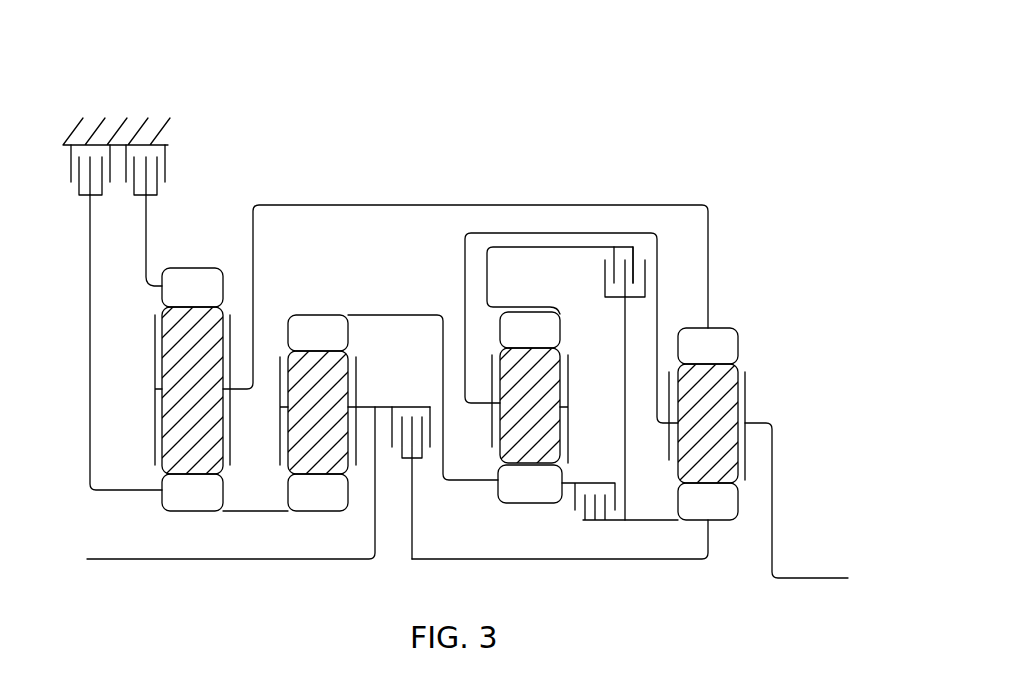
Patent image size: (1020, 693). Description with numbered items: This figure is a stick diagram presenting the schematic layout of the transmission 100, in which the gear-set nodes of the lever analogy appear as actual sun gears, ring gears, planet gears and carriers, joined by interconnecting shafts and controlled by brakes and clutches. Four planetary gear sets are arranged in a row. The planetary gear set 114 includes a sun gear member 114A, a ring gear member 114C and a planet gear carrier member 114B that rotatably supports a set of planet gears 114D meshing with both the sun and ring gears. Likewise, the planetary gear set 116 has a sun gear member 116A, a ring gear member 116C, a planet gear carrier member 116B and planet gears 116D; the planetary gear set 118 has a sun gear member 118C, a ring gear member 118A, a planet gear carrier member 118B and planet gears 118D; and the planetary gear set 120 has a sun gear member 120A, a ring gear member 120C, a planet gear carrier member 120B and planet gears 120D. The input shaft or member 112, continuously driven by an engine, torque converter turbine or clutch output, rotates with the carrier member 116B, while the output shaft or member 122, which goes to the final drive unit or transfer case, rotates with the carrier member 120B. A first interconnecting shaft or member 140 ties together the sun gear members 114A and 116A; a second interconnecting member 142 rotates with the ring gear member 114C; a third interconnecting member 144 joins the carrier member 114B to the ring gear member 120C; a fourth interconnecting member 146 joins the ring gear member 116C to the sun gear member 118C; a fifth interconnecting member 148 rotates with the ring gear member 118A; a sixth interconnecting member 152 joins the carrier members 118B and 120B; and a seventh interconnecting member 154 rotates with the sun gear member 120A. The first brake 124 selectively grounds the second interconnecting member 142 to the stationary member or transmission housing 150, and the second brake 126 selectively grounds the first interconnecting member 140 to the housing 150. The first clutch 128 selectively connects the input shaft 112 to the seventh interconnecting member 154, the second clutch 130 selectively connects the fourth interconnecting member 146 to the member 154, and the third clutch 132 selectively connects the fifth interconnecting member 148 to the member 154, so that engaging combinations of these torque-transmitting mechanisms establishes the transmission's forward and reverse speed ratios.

The transmission 100 is at (702, 148).
The input shaft or member 112 is at (175, 562).
The planetary gear set 114 is at (214, 410).
The sun gear member 114A is at (211, 504).
The planet gear carrier member 114B is at (155, 440).
The ring gear member 114C is at (211, 299).
The set of planet gears 114D is at (211, 403).
The planetary gear set 116 is at (334, 434).
The sun gear member 116A is at (337, 504).
The planet gear carrier member 116B is at (280, 443).
The ring gear member 116C is at (337, 346).
The set of planet gears 116D is at (337, 423).
The planetary gear set 118 is at (534, 431).
The ring gear member 118A is at (549, 341).
The planet gear carrier member 118B is at (490, 424).
The sun gear member 118C is at (549, 494).
The set of planet gears 118D is at (549, 418).
The planetary gear set 120 is at (719, 468).
The sun gear member 120A is at (727, 516).
The planet gear carrier member 120B is at (669, 443).
The ring gear member 120C is at (727, 361).
The set of planet gears 120D is at (727, 436).
The output shaft or member 122 is at (797, 580).
The first brake 124 is at (183, 164).
The second brake 126 is at (101, 201).
The first clutch 128 is at (426, 402).
The second clutch 130 is at (604, 478).
The third clutch 132 is at (600, 269).
The first interconnecting shaft or member 140 is at (90, 385).
The second interconnecting shaft or member 142 is at (146, 291).
The third interconnecting shaft or member 144 is at (372, 203).
The fourth interconnecting shaft or member 146 is at (444, 472).
The fifth interconnecting shaft or member 148 is at (568, 245).
The stationary member or transmission housing 150 is at (129, 136).
The sixth interconnecting shaft or member 152 is at (510, 231).
The seventh interconnecting shaft or member 154 is at (624, 324).